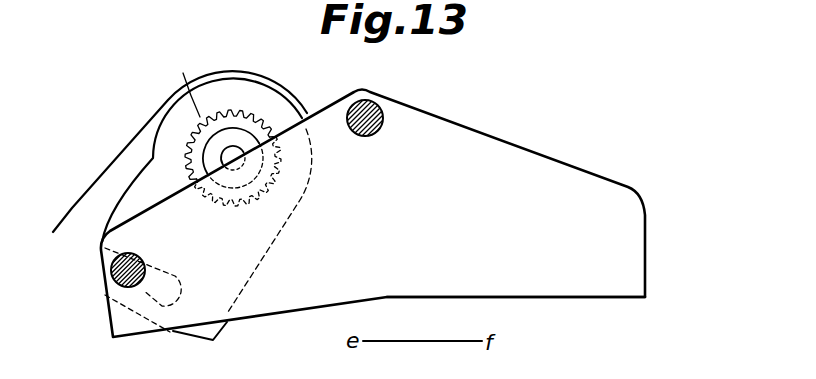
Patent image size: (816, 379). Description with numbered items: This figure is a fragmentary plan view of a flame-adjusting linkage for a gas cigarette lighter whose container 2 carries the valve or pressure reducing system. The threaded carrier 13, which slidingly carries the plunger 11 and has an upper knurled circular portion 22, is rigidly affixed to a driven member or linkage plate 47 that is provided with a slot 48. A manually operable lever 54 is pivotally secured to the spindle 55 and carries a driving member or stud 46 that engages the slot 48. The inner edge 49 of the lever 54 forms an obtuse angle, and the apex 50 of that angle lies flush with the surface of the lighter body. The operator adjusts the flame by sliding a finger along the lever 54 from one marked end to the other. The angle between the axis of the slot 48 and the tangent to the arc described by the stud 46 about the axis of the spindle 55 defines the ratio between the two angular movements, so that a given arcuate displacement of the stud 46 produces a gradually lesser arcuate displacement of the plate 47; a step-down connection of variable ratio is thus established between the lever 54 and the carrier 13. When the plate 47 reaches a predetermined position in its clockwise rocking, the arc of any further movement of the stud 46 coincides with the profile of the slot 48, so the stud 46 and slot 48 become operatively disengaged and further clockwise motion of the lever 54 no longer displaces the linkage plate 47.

The container 2 is at (95, 188).
The plunger 11 is at (250, 140).
The threaded carrier 13 is at (237, 117).
The knurled circular portion 22 is at (182, 81).
The stud 46 is at (111, 272).
The linkage plate 47 is at (153, 165).
The slot 48 is at (125, 297).
The inner edge 49 is at (283, 315).
The apex 50 is at (386, 298).
The lever 54 is at (522, 172).
The spindle 55 is at (374, 112).